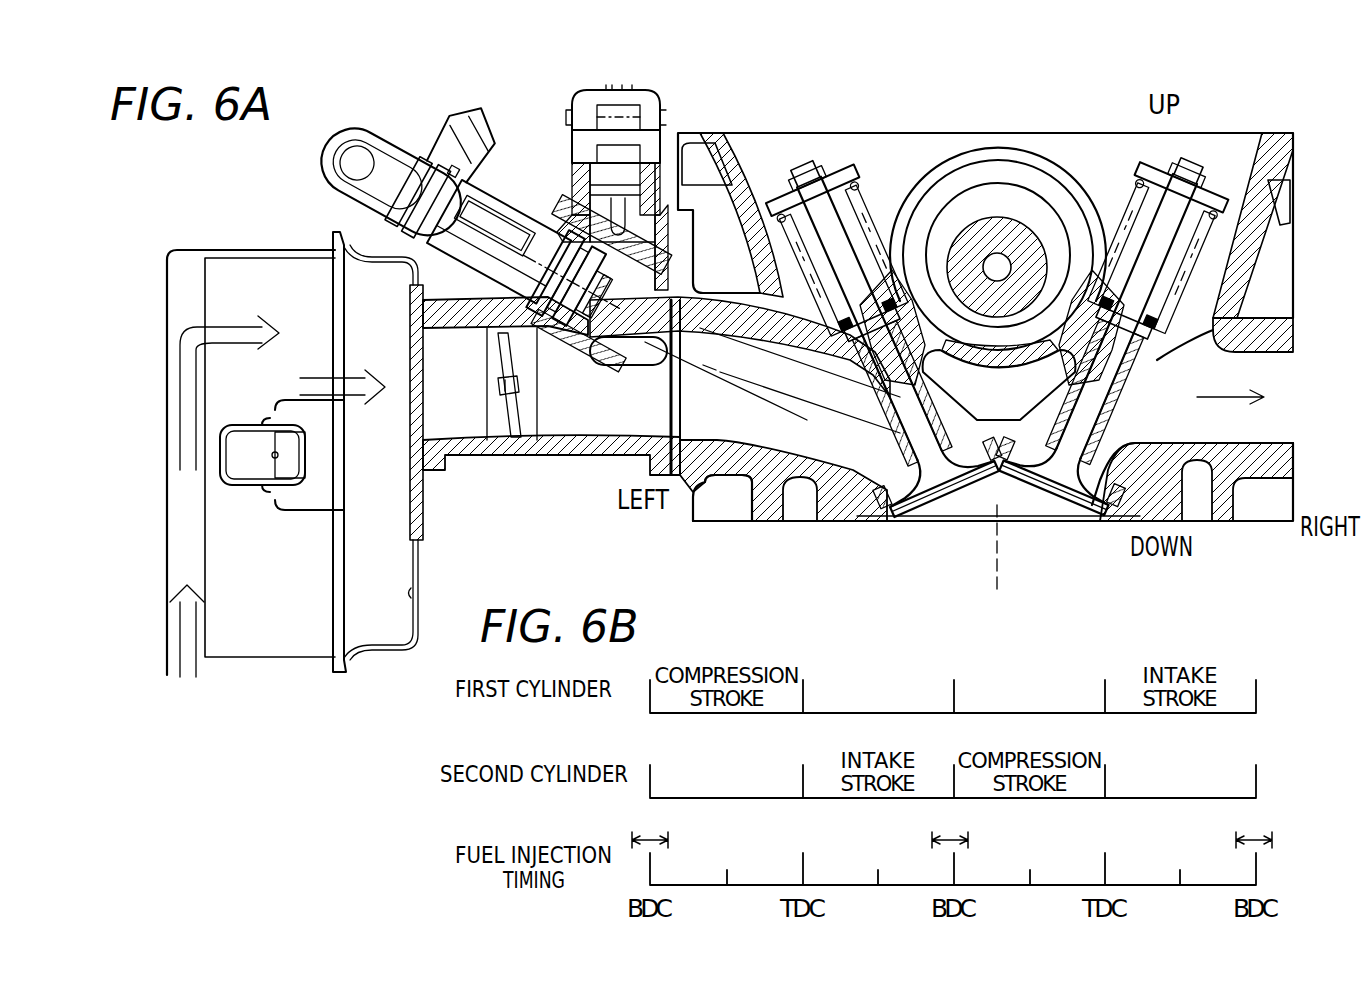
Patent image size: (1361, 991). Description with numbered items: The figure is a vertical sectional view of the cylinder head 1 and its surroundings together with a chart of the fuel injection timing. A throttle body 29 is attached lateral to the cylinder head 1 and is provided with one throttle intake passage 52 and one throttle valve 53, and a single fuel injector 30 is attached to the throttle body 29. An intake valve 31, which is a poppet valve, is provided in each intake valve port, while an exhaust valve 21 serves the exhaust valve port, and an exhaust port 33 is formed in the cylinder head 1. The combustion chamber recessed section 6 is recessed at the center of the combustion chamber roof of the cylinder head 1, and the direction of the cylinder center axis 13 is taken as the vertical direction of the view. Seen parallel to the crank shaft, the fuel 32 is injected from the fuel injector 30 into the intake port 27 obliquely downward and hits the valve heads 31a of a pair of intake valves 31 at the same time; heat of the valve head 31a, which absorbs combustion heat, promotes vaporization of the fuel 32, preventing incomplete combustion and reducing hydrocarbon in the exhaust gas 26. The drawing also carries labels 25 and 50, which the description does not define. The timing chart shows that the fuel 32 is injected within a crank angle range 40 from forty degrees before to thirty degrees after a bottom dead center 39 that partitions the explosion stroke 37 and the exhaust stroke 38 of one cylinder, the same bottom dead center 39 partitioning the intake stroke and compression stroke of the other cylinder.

In FIG. 6A, the cylinder head 1 is at (951, 361).
In FIG. 6A, the combustion chamber recessed section 6 is at (1033, 500).
In FIG. 6A, the cylinder center axis 13 is at (999, 550).
In FIG. 6A, the exhaust valve 21 is at (1110, 430).
In FIG. 6A, the intake air flow 25 is at (320, 380).
In FIG. 6A, the exhaust gas 26 is at (1221, 395).
In FIG. 6A, the intake port 27 is at (770, 460).
In FIG. 6A, the throttle body 29 is at (490, 468).
In FIG. 6A, the fuel injector 30 is at (465, 210).
In FIG. 6A, the intake valve 31 is at (936, 410).
In FIG. 6A, the valve head 31a is at (928, 475).
In FIG. 6A, the fuel 32 is at (714, 400).
In FIG. 6A, the exhaust port 33 is at (1260, 437).
In FIG. 6B, the explosion stroke 37 is at (889, 646).
In FIG. 6B, the exhaust stroke 38 is at (1034, 646).
In FIG. 6B, the bottom dead center 39 is at (655, 868).
In FIG. 6B, the crank angle range 40 is at (653, 840).
In FIG. 6A, the air cleaner 50 is at (345, 676).
In FIG. 6A, the throttle intake passage 52 is at (557, 428).
In FIG. 6A, the throttle valve 53 is at (522, 363).